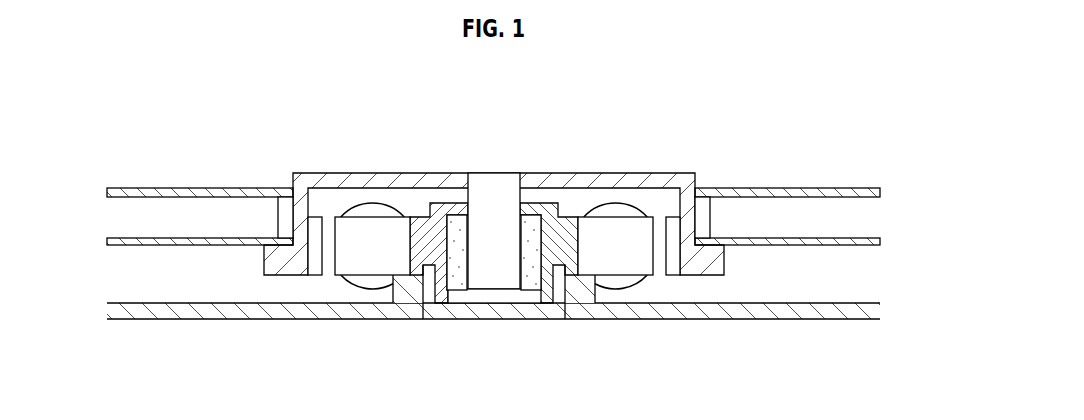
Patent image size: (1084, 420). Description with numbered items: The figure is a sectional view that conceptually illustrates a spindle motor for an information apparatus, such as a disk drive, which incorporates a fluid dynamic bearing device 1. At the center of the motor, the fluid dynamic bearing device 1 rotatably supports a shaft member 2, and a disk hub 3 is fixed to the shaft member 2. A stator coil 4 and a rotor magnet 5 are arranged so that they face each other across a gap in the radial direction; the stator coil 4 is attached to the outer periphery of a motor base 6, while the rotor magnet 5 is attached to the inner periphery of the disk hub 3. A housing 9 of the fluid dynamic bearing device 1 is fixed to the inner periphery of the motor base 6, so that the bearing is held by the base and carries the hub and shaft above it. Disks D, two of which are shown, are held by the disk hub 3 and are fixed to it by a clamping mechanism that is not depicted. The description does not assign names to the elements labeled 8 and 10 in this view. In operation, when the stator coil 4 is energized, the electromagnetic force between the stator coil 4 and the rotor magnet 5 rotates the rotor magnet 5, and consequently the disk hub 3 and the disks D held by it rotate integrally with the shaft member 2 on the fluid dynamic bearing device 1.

The fluid dynamic bearing device 1 is at (550, 200).
The shaft member 2 is at (501, 173).
The disk hub 3 is at (676, 184).
The stator coil 4 is at (647, 272).
The rotor magnet 5 is at (673, 272).
The motor base 6 is at (583, 308).
The magnet 8 is at (535, 216).
The housing 9 is at (440, 210).
The support bracket 10 is at (475, 305).
The disk D is at (807, 187).